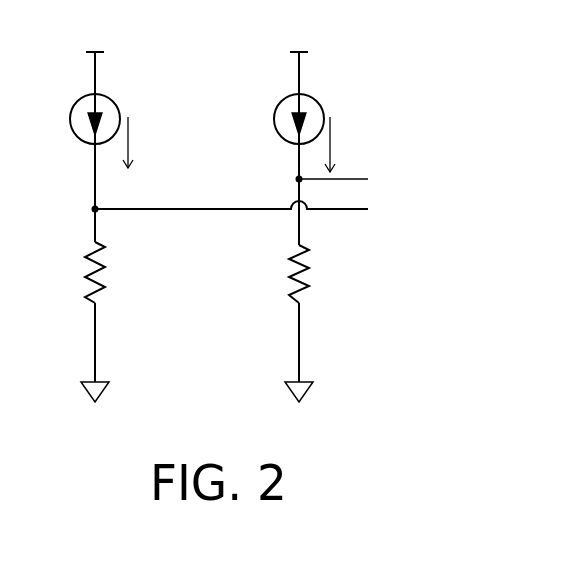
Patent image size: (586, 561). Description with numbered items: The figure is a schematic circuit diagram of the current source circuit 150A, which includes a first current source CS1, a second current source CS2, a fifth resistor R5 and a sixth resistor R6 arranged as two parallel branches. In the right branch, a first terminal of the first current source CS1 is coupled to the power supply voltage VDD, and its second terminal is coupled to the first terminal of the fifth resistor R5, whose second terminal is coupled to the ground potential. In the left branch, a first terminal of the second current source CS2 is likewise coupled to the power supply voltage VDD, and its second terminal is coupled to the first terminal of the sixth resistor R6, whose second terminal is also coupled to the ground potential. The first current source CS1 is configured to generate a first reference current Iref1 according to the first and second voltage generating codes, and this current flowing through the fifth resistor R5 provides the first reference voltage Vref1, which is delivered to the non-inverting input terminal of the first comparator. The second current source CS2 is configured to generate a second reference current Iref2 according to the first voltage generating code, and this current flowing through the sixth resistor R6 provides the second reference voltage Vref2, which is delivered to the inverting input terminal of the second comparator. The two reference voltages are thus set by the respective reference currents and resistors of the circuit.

The current source circuit 150A is at (274, 222).
The first current source CS1 is at (311, 95).
The second current source CS2 is at (107, 95).
The fifth resistor R5 is at (317, 274).
The sixth resistor R6 is at (112, 272).
The first reference current Iref1 is at (348, 144).
The second reference current Iref2 is at (146, 142).
The first reference voltage Vref1 is at (360, 179).
The second reference voltage Vref2 is at (258, 209).
The power supply voltage VDD is at (197, 37).